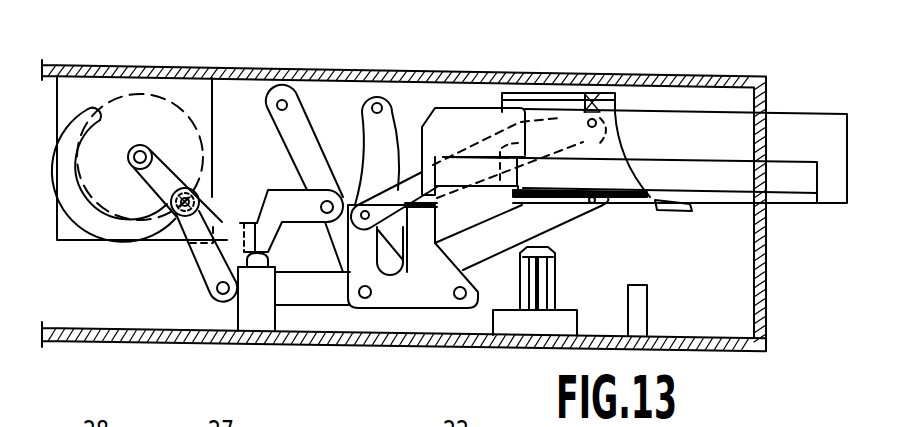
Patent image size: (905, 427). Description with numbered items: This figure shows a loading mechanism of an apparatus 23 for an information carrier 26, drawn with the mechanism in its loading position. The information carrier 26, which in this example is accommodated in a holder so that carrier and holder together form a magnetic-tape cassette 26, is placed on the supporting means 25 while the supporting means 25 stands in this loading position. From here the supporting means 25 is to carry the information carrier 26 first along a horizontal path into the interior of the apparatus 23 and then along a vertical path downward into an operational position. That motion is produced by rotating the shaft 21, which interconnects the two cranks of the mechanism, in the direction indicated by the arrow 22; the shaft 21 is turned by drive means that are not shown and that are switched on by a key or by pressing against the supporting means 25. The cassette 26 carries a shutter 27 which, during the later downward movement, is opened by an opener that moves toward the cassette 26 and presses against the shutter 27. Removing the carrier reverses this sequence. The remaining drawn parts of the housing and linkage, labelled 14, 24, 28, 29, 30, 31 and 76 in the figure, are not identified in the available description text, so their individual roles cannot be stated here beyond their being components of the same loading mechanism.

The arm 14 is at (197, 167).
The shaft 21 is at (141, 145).
The arrow 22 is at (143, 193).
The apparatus 23 is at (497, 62).
The cylinder actuator 24 is at (275, 314).
The supporting means 25 is at (614, 96).
The information carrier 26 is at (798, 104).
The shutter 27 is at (440, 106).
The band 28 is at (93, 106).
The drum frame 29 is at (115, 224).
The roller lever 30 is at (181, 236).
The pin 31 is at (558, 282).
The plate lever 76 is at (438, 222).